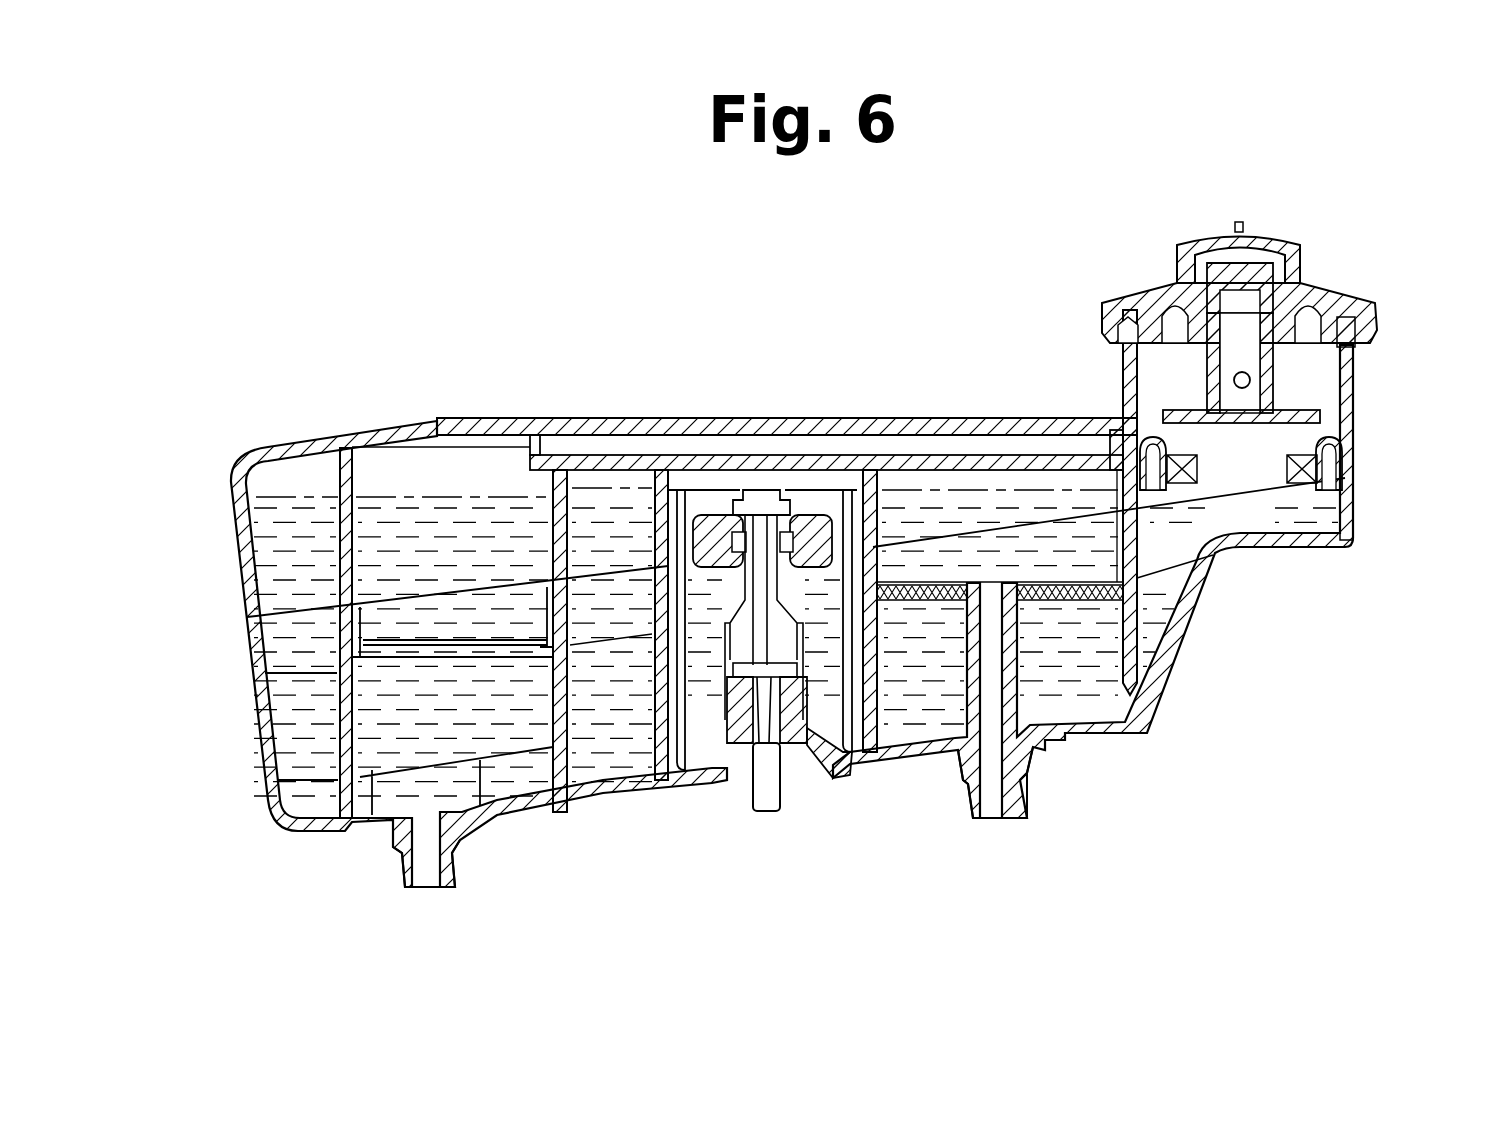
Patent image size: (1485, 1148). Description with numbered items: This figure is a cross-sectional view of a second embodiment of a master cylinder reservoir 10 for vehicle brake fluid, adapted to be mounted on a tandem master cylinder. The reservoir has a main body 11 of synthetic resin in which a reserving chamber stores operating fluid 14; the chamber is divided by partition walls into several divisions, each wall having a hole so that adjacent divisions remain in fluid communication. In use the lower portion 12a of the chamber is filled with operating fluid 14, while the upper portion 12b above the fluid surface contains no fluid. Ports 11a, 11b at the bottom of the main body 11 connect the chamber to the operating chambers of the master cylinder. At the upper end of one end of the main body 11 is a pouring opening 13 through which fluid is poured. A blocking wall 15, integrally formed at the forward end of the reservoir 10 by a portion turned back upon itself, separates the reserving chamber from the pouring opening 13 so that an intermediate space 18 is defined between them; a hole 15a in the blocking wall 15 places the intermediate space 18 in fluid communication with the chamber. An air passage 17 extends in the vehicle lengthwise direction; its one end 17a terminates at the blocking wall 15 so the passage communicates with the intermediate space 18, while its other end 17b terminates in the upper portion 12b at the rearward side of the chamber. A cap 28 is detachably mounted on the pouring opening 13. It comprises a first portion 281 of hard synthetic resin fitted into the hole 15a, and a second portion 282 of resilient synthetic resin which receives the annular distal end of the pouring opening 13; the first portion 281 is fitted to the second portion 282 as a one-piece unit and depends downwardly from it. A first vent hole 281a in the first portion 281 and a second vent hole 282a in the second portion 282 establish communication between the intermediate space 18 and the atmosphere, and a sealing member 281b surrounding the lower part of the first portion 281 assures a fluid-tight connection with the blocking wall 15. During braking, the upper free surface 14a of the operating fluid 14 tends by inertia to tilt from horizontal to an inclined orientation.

The master cylinder reservoir 10 is at (825, 410).
The main body 11 is at (712, 782).
The port 11a is at (427, 860).
The port 11b is at (993, 803).
The lower portion of the reserving chamber 12a is at (405, 707).
The upper portion of the reserving chamber 12b is at (432, 460).
The pouring opening 13 is at (1358, 352).
The operating fluid 14 is at (613, 722).
The upper free surface 14a is at (385, 490).
The blocking wall 15 is at (1338, 482).
The hole 15a is at (1197, 588).
The air passage 17 is at (770, 443).
The one end of the air passage 17a is at (1112, 445).
The other end of the air passage 17b is at (548, 445).
The intermediate space 18 is at (1157, 378).
The master cylinder reservoir cap 28 is at (1291, 427).
The first portion of the cap 281 is at (1316, 498).
The first vent hole 281a is at (1190, 492).
The sealing member 281b is at (1302, 485).
The second portion of the cap 282 is at (1377, 302).
The second vent hole 282a is at (1232, 232).